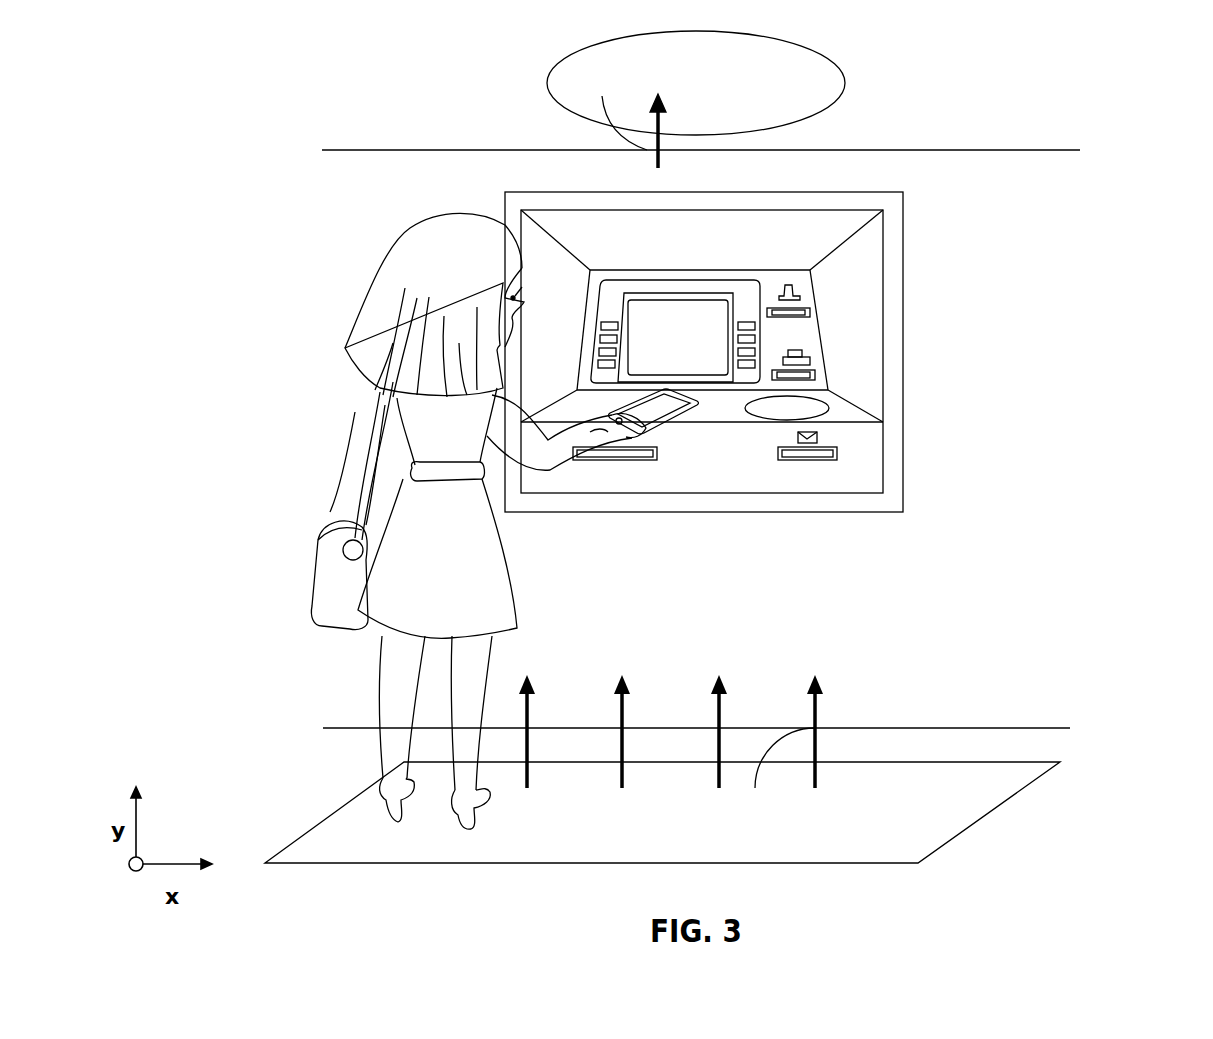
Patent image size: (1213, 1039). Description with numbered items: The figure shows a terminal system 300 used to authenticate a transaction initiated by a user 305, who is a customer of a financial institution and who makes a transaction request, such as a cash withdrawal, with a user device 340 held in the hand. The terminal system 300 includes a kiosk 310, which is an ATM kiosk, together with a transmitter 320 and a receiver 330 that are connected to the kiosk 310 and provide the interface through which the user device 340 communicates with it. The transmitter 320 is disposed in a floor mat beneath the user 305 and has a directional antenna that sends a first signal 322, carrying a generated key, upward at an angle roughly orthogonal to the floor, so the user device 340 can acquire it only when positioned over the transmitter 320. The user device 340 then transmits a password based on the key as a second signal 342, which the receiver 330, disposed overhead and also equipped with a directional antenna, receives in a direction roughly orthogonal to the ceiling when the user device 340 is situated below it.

The terminal system 300 is at (1196, 44).
The user 305 is at (355, 413).
The kiosk 310 is at (903, 248).
The transmitter 320 is at (1060, 762).
The first signal 322 is at (815, 712).
The receiver 330 is at (845, 80).
The user device 340 is at (657, 450).
The second signal 342 is at (670, 150).